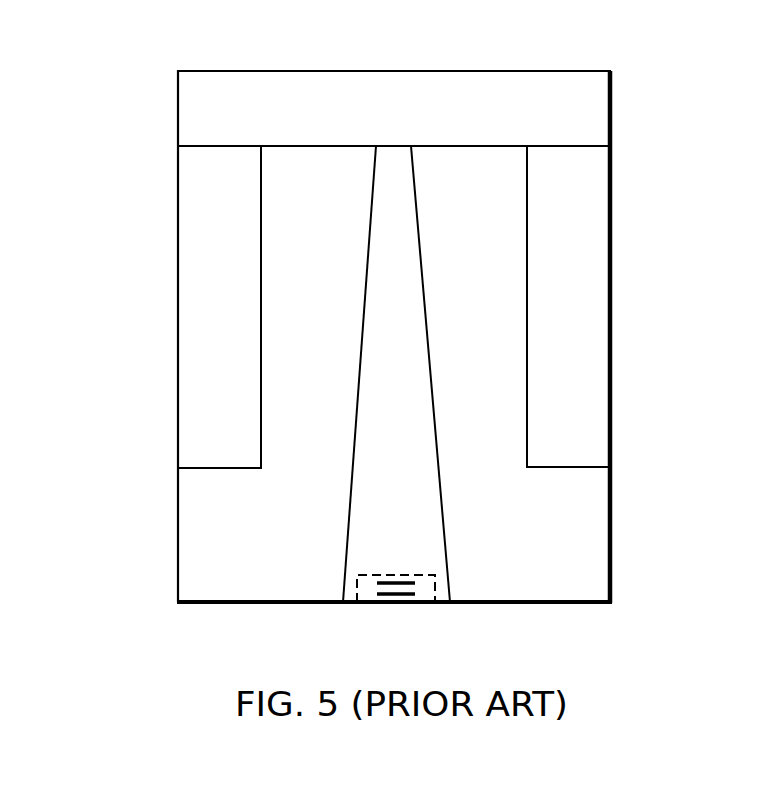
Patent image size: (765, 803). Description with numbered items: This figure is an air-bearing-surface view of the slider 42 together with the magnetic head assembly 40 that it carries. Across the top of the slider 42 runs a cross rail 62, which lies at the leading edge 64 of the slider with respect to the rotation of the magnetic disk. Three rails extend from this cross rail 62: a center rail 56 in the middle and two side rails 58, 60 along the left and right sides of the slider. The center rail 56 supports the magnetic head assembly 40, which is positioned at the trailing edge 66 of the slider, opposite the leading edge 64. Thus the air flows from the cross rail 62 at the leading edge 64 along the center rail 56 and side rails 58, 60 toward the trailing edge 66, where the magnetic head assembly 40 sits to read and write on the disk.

The slider 42 is at (178, 547).
The cross rail 62 is at (308, 78).
The leading edge 64 is at (460, 70).
The side rail 58 is at (190, 217).
The side rail 60 is at (585, 215).
The center rail 56 is at (380, 252).
The magnetic head assembly 40 is at (368, 607).
The trailing edge 66 is at (510, 605).